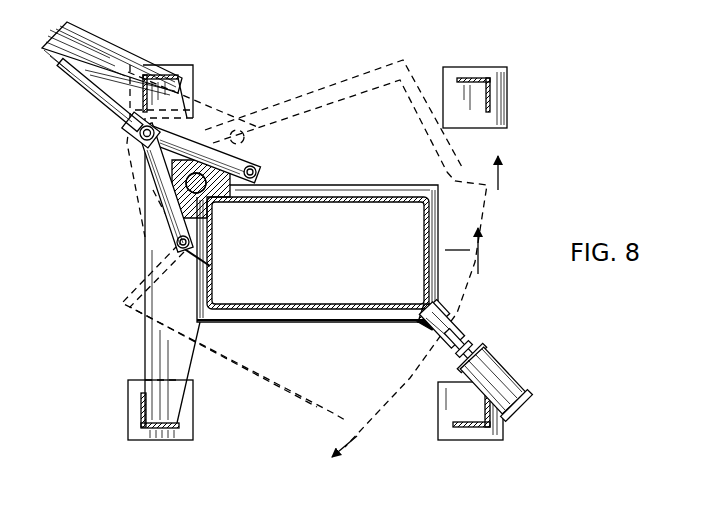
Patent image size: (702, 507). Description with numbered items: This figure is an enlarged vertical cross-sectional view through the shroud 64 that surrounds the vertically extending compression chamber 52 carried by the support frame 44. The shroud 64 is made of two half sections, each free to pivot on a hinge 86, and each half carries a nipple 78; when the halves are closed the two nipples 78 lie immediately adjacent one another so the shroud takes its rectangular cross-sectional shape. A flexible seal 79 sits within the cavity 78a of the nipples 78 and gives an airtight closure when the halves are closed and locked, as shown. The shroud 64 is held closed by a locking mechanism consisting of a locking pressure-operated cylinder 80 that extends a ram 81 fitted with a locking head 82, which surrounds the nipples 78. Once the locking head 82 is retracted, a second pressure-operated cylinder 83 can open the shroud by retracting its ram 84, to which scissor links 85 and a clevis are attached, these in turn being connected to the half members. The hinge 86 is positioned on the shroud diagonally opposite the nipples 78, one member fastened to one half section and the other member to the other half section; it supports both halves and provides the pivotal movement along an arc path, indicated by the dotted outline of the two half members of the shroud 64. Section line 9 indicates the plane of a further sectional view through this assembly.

The section line 9- 9 is at (426, 250).
The support frame 44 is at (160, 77).
The compression chamber 52 is at (271, 495).
The shroud 64 is at (330, 196).
The nipples 78 is at (418, 320).
The cavity 78a is at (428, 326).
The flexible seal 79 is at (445, 310).
The locking pressure-operated cylinder 80 is at (508, 368).
The ram 81 is at (472, 348).
The locking head 82 is at (458, 330).
The pressure-operated cylinder 83 is at (72, 78).
The ram 84 is at (108, 98).
The scissor links 85 is at (183, 143).
The hinge 86 is at (200, 163).